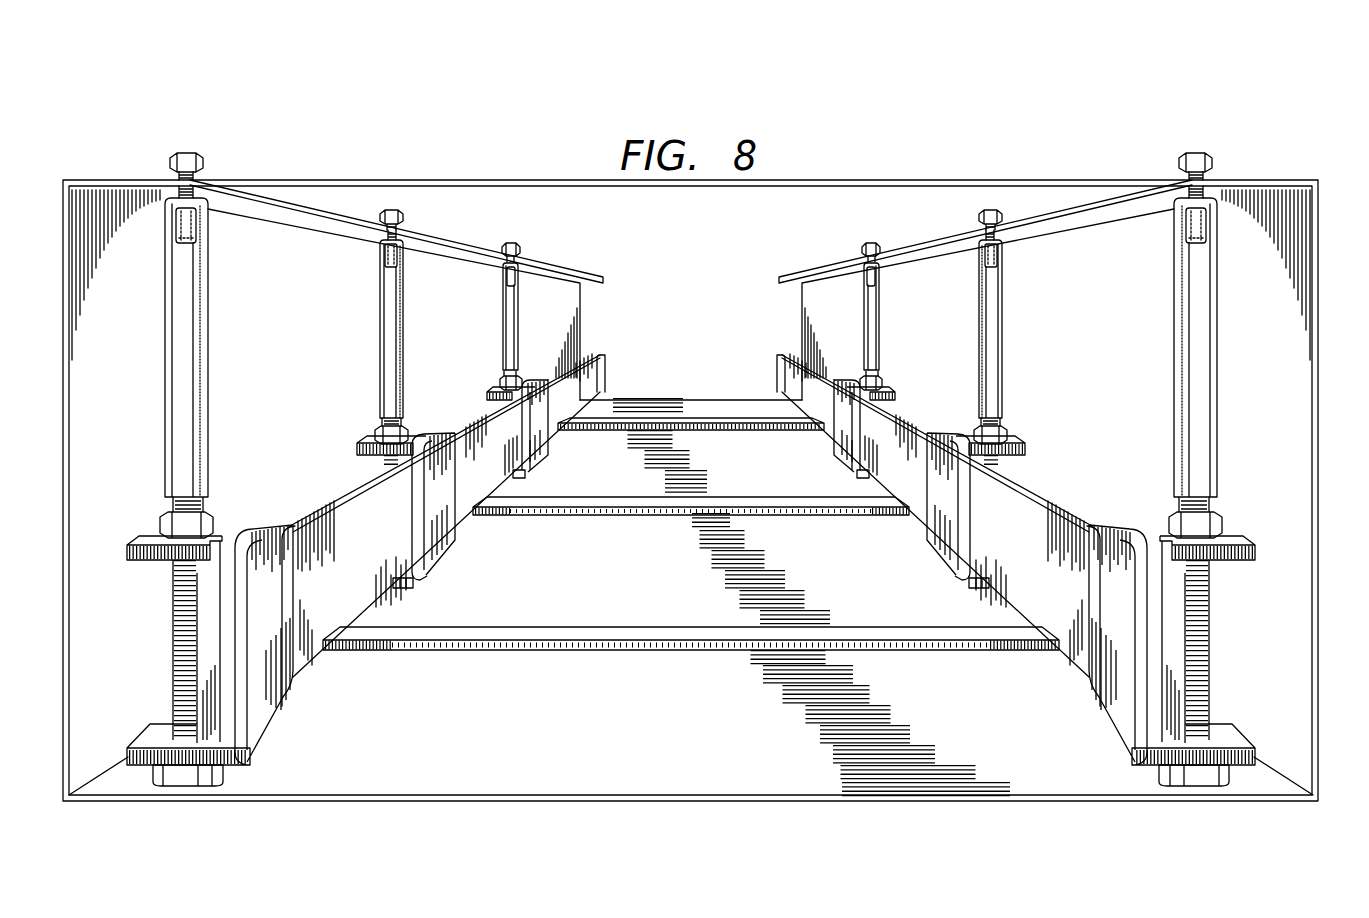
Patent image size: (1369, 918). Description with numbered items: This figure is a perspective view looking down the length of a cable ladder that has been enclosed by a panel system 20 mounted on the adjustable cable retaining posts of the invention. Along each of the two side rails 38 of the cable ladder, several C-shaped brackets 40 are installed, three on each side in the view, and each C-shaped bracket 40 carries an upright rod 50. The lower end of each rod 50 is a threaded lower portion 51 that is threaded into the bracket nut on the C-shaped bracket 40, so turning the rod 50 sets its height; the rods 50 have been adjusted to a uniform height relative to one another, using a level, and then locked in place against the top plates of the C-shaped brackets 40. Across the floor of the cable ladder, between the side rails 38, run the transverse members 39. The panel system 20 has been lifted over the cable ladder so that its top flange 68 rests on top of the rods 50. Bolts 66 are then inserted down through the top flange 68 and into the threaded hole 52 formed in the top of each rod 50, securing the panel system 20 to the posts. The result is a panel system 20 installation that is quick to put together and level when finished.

The panel system 20 is at (1320, 385).
The side rails 38 is at (305, 516).
The cross bar 39 is at (708, 418).
The C-shaped bracket 40 is at (538, 450).
The rod 50 is at (175, 322).
The threaded lower portion 51 is at (500, 396).
The threaded hole 52 is at (185, 248).
The bolts 66 is at (172, 152).
The top flange 68 is at (272, 197).